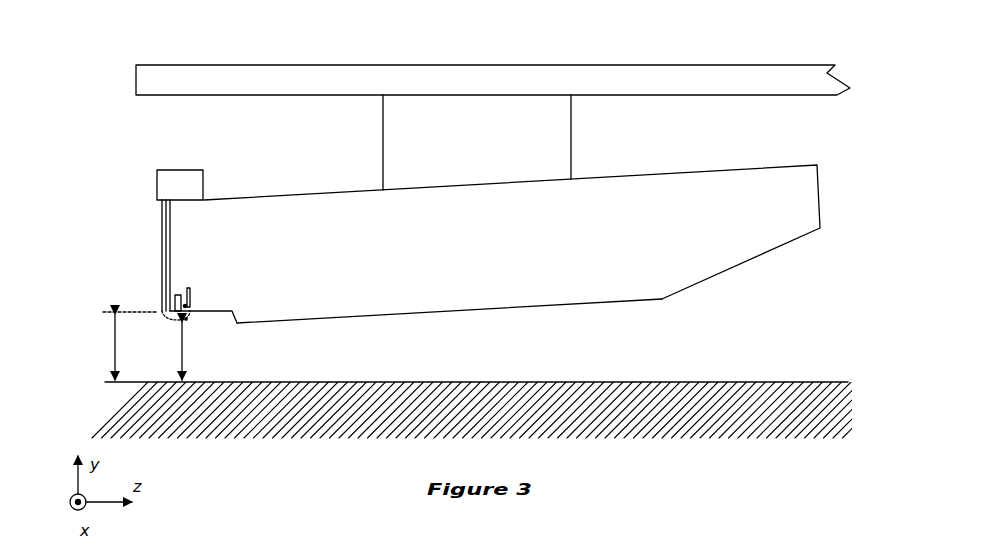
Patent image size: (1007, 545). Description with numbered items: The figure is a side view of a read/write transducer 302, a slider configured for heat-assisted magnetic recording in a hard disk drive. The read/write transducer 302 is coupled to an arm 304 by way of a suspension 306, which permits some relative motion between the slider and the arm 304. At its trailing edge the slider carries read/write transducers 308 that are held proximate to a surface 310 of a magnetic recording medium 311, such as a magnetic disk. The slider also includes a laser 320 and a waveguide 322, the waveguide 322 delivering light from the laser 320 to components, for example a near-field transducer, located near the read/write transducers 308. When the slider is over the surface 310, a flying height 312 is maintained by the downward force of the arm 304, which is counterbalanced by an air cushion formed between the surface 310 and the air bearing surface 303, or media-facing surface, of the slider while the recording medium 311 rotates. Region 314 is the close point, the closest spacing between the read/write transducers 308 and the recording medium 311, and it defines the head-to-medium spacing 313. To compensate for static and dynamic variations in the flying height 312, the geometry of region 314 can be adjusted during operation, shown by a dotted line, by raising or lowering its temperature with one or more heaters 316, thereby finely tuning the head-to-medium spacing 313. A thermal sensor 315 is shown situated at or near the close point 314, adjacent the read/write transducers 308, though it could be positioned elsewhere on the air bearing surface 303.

The read/write transducer 302 is at (495, 251).
The air bearing surface 303 is at (337, 318).
The arm 304 is at (763, 72).
The suspension 306 is at (571, 137).
The read/write transducers 308 is at (166, 290).
The surface 310 is at (711, 381).
The magnetic recording medium 311 is at (725, 428).
The flying height 312 is at (115, 346).
The head-to-medium spacing 313 is at (161, 351).
The close point region 314 is at (187, 319).
The thermal sensor 315 is at (188, 304).
The heater 316 is at (178, 293).
The laser 320 is at (183, 177).
The waveguide 322 is at (166, 236).